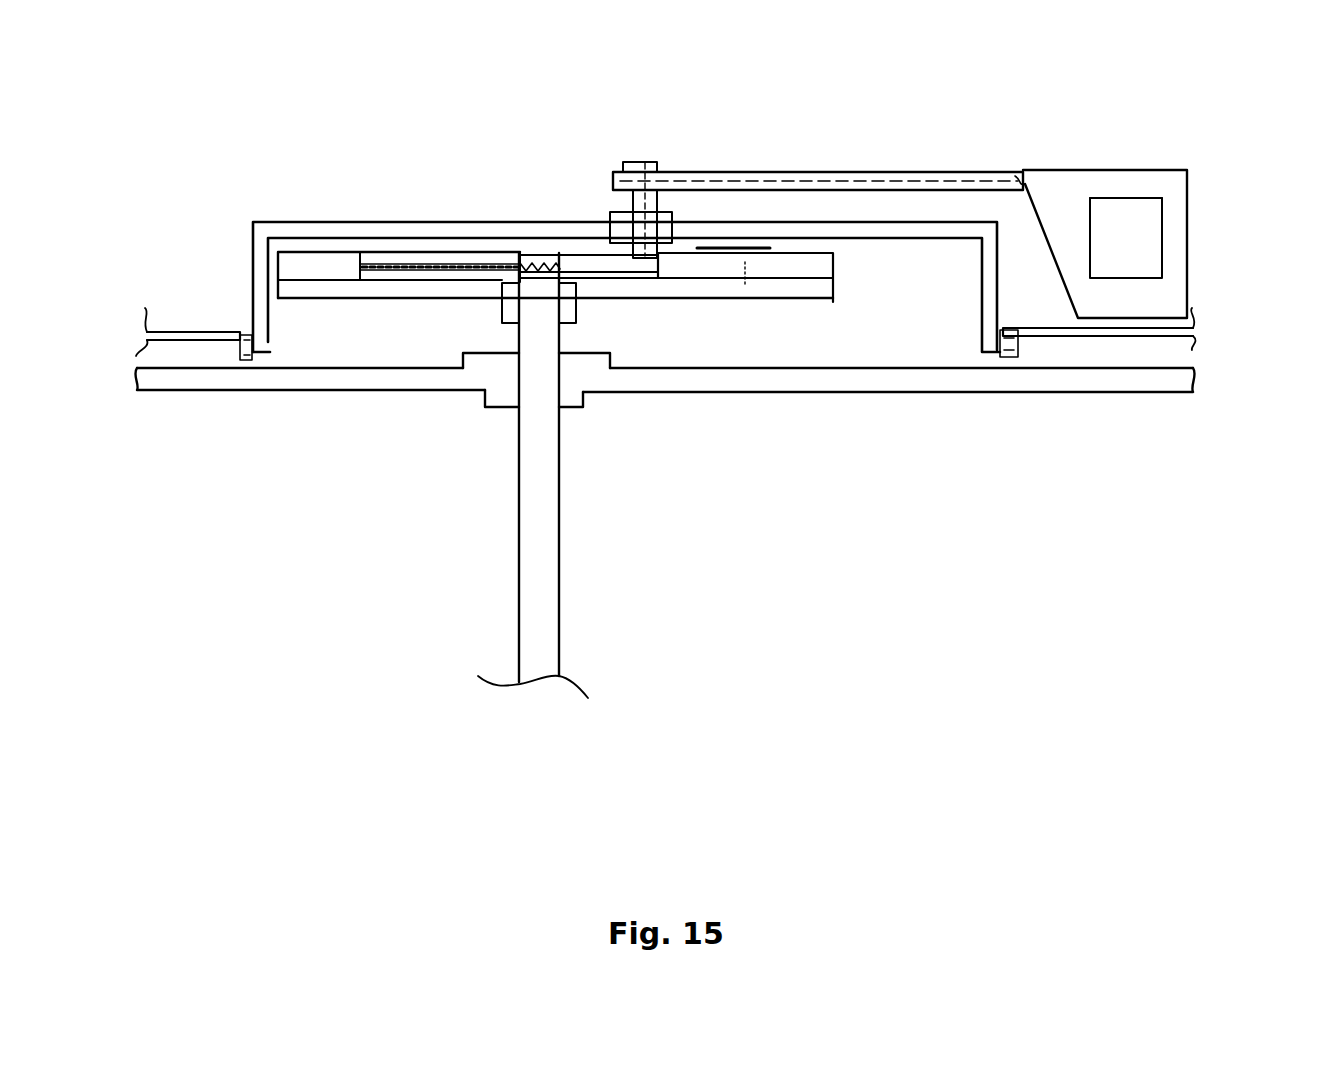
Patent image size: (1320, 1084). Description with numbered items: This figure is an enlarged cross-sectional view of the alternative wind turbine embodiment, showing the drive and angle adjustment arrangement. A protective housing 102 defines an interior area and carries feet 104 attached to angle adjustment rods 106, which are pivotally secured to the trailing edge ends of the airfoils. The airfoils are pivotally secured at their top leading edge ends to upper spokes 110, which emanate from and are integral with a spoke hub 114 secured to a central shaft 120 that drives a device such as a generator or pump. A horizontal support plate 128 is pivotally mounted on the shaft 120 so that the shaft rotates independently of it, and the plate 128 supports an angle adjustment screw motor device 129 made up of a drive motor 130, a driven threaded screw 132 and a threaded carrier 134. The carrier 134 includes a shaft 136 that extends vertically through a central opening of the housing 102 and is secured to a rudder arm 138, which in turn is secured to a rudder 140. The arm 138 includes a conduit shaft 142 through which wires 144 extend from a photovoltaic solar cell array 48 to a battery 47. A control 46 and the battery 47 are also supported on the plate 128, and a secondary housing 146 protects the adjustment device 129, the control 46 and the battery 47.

The protective housing 102 is at (403, 218).
The feet 104 is at (268, 340).
The angle adjustment rods 106 is at (190, 328).
The upper spokes 110 is at (345, 386).
The spoke hub 114 is at (578, 400).
The central shaft 120 is at (540, 535).
The horizontal support plate 128 is at (683, 296).
The angle adjustment screw motor device 129 is at (320, 246).
The drive motor 130 is at (340, 255).
The driven threaded screw 132 is at (447, 263).
The threaded carrier 134 is at (557, 255).
The shaft 136 is at (660, 204).
The rudder arm 138 is at (773, 171).
The rudder 140 is at (1183, 232).
The conduit shaft 142 is at (862, 180).
The wires 144 is at (1115, 197).
The secondary housing 146 is at (495, 255).
The control 46 is at (812, 272).
The battery 47 is at (720, 272).
The photovoltaic solar cell array 48 is at (1145, 258).